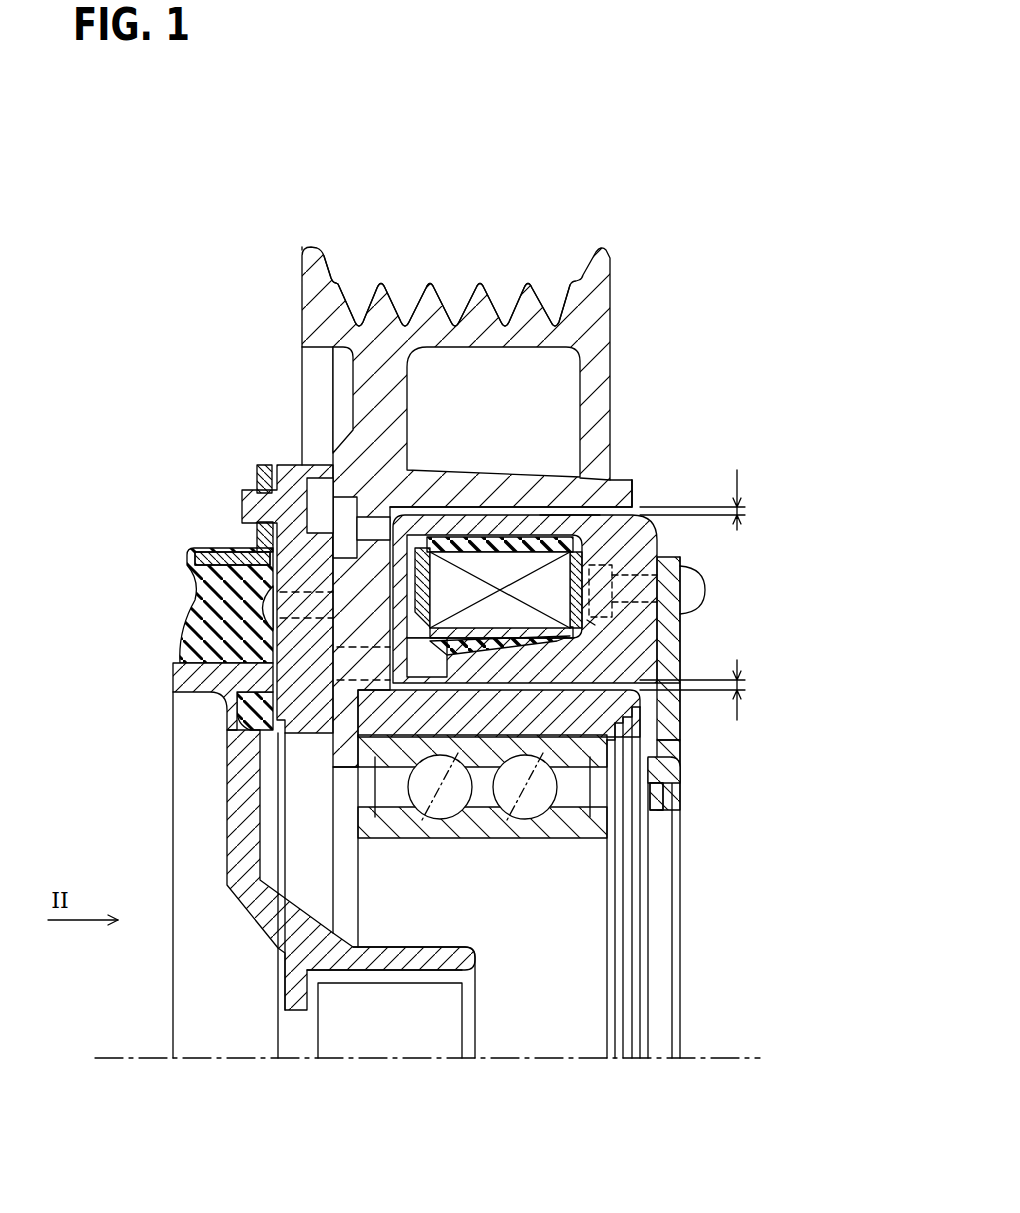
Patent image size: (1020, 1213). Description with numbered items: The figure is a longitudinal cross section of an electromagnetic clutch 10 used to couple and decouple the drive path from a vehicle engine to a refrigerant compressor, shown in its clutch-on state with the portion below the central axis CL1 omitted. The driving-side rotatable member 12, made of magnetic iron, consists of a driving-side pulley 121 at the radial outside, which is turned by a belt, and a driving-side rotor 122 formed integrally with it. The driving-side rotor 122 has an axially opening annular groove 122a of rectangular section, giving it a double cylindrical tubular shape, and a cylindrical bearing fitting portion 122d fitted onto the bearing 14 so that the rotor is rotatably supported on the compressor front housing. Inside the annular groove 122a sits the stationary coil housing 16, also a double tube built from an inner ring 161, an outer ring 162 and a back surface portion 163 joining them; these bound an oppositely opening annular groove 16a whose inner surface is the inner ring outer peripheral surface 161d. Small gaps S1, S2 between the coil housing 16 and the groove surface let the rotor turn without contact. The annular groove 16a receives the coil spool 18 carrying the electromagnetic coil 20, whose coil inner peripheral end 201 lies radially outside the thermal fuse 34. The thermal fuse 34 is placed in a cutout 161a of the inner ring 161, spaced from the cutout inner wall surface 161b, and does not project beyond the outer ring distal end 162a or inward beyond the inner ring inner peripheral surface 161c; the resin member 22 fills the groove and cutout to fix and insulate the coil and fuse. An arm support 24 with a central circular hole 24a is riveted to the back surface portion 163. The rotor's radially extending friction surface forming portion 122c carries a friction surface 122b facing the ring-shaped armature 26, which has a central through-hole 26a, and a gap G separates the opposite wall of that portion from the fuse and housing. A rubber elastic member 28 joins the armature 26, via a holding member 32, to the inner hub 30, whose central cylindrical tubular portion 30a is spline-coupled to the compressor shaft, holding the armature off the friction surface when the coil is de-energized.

The electromagnetic clutch 10 is at (168, 163).
The driving-side rotatable member 12 is at (297, 246).
The driving-side pulley 121 is at (318, 280).
The driving-side rotor 122 is at (640, 492).
The annular groove 122a is at (660, 548).
The friction surface 122b is at (254, 594).
The friction surface forming portion 122c is at (257, 552).
The bearing fitting portion 122d is at (556, 777).
The bearing 14 is at (600, 828).
The coil housing 16 is at (640, 545).
The annular groove 16a is at (553, 515).
The inner ring 161 is at (592, 740).
The cutout 161a is at (612, 580).
The cutout inner wall surface 161b is at (440, 840).
The inner ring inner peripheral surface 161c is at (613, 717).
The inner ring outer peripheral surface 161d is at (700, 605).
The outer ring 162 is at (493, 537).
The outer ring distal end 162a is at (365, 520).
The back surface portion 163 is at (580, 636).
The coil spool 18 is at (500, 653).
The electromagnetic coil 20 is at (540, 637).
The coil inner peripheral end 201 is at (587, 620).
The resin member 22 is at (540, 585).
The arm support 24 is at (667, 752).
The circular hole 24a is at (657, 790).
The armature 26 is at (291, 470).
The through-hole 26a is at (313, 735).
The elastic member 28 is at (203, 587).
The inner hub 30 is at (262, 940).
The central cylindrical tubular portion 30a is at (480, 947).
The holding member 32 is at (257, 470).
The thermal fuse 34 is at (240, 650).
The gap G is at (422, 661).
The small gap S1 is at (737, 700).
The small gap S2 is at (737, 478).
The central axis CL1 is at (740, 1058).